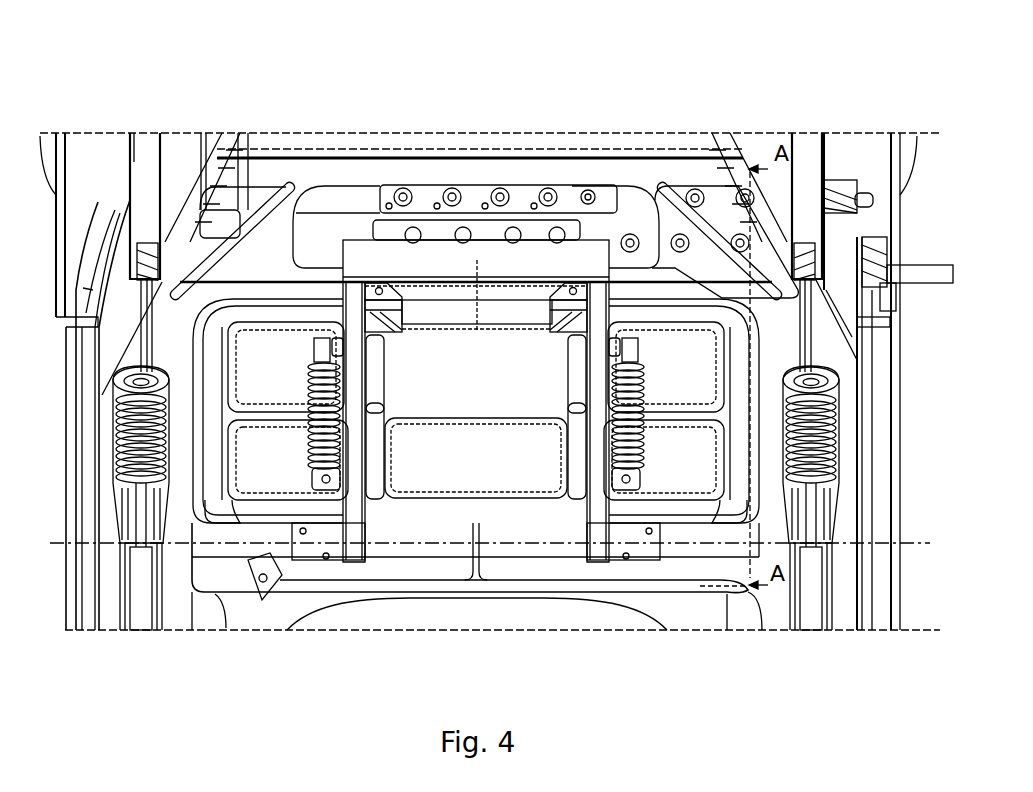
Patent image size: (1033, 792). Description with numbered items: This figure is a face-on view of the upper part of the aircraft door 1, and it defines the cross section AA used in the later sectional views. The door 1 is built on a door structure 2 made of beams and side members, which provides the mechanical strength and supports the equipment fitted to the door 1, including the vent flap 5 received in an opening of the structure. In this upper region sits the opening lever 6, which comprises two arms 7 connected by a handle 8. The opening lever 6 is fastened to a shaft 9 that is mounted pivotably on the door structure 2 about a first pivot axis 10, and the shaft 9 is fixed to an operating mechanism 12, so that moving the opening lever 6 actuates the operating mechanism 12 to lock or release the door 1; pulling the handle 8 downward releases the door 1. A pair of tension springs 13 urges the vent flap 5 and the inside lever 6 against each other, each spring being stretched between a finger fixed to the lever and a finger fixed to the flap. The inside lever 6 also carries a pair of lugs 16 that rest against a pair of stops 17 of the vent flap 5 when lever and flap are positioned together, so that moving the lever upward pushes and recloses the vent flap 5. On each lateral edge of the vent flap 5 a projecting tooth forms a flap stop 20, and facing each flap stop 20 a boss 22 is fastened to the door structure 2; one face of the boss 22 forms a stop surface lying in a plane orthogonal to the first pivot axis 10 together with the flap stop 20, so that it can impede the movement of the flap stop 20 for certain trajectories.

The aircraft door 1 is at (453, 112).
The door structure 2 is at (884, 404).
The vent flap 5 is at (662, 358).
The opening lever 6 is at (418, 290).
The arms 7 is at (356, 448).
The handle 8 is at (477, 332).
The shaft 9 is at (428, 513).
The first pivot axis 10 is at (897, 540).
The operating mechanism 12 is at (138, 610).
The tension springs 13 is at (308, 402).
The lugs 16 is at (387, 380).
The stops 17 is at (395, 322).
The flap stop 20 is at (210, 516).
The boss 22 is at (200, 516).